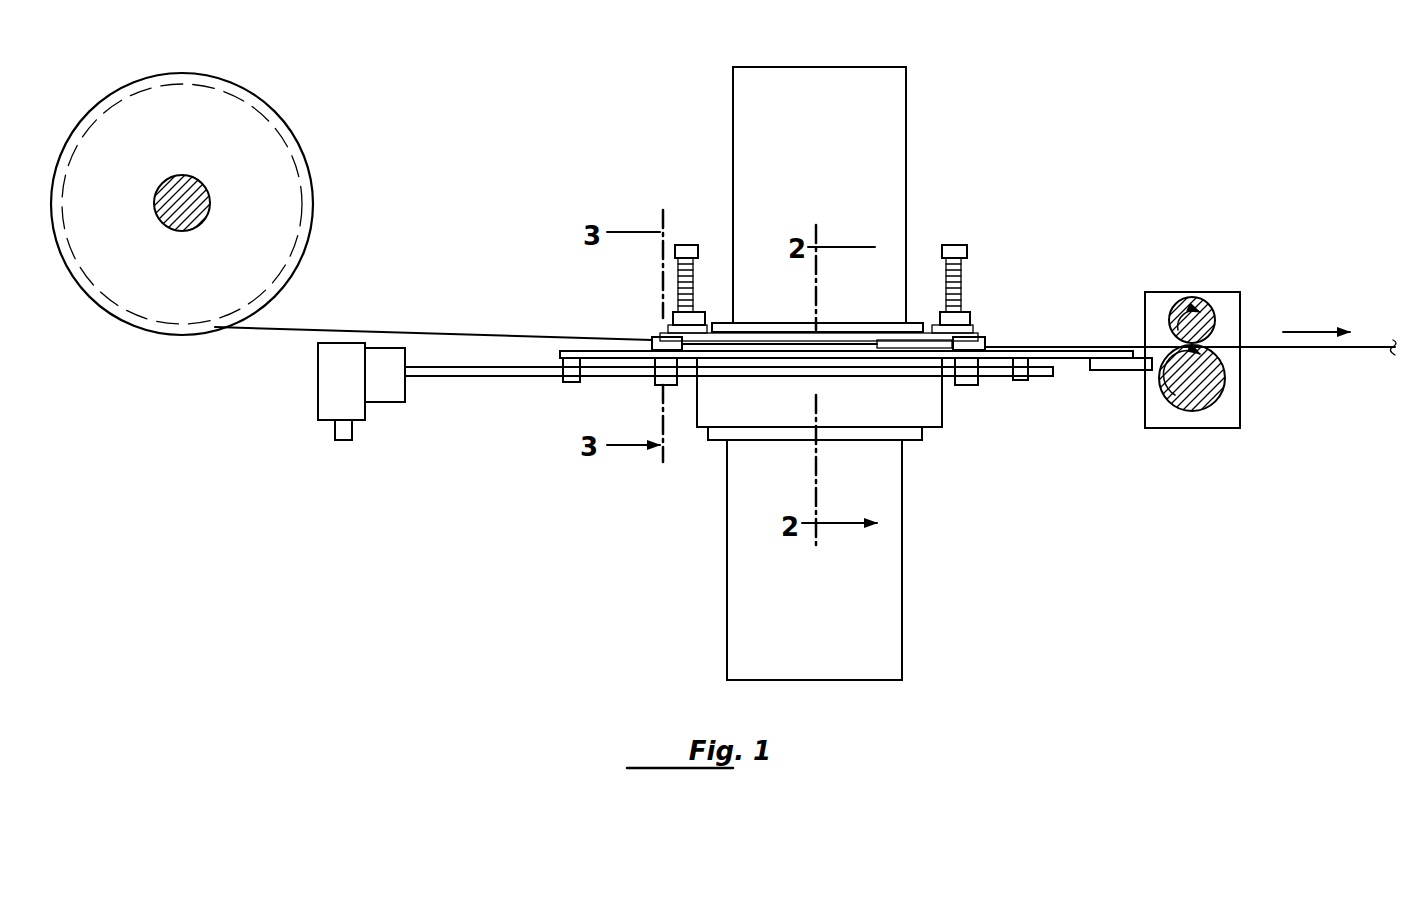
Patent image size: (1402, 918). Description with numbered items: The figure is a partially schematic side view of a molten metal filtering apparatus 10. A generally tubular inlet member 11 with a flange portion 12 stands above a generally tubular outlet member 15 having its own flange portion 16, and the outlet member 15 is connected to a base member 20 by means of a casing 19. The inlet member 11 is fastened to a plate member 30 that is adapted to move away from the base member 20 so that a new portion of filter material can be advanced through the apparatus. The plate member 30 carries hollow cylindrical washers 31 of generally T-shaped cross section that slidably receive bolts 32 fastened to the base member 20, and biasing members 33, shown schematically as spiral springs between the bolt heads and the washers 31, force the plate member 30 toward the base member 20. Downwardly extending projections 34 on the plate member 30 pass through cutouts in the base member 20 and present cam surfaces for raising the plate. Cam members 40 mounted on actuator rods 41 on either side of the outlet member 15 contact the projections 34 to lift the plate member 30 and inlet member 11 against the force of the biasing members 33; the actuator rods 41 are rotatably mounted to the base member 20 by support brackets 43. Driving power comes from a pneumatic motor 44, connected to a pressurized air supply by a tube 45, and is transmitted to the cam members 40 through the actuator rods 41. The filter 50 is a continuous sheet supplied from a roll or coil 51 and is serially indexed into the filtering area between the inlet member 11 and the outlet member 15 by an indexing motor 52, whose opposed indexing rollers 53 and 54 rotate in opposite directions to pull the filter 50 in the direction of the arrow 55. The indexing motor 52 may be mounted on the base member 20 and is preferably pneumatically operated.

The molten metal filtering apparatus 10 is at (990, 80).
The inlet member 11 is at (785, 78).
The flange portion 12 is at (910, 328).
The outlet member 15 is at (751, 549).
The flange portion 16 is at (752, 434).
The casing 19 is at (910, 403).
The base member 20 is at (1055, 351).
The plate member 30 is at (893, 333).
The hollow cylindrical washers 31 is at (690, 321).
The bolts 32 is at (676, 245).
The biasing members 33 is at (695, 278).
The downwardly extending projections 34 is at (657, 340).
The cam members 40 is at (663, 373).
The actuator rods 41 is at (1000, 376).
The support brackets 43 is at (568, 372).
The pneumatic motor 44 is at (328, 378).
The tube 45 is at (336, 436).
The filter 50 is at (318, 323).
The roll or coil 51 is at (277, 172).
The indexing motor 52 is at (1225, 300).
The indexing roller 53 is at (1190, 310).
The indexing roller 54 is at (1197, 384).
The arrow 55 is at (1310, 331).